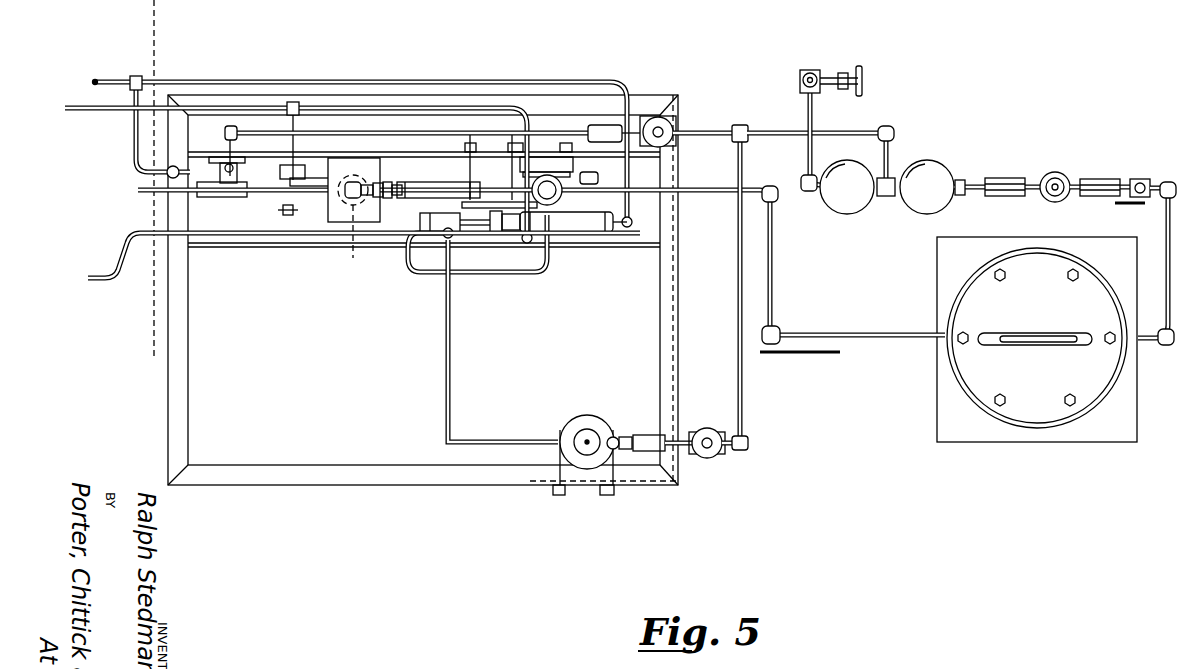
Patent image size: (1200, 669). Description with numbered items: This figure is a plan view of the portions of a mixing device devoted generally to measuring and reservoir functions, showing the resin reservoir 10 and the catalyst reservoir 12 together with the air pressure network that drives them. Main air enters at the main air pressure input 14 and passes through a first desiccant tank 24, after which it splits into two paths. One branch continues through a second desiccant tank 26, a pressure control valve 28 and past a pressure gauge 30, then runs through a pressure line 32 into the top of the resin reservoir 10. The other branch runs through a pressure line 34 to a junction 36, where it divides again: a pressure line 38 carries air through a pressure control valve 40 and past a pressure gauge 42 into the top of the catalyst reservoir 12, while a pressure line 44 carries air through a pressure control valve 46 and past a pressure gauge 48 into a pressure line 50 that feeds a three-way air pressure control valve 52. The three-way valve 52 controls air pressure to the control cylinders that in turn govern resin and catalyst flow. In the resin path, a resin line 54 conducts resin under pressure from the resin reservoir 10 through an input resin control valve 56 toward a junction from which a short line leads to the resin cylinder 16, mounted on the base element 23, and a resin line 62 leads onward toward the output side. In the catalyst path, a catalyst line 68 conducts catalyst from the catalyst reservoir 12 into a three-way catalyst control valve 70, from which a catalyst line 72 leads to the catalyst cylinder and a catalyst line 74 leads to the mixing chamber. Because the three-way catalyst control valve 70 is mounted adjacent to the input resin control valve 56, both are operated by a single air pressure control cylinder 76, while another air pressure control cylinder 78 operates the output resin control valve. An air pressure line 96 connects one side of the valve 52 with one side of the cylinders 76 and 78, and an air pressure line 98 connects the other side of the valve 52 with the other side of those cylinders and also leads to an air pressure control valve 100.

The resin reservoir 10 is at (1050, 379).
The catalyst reservoir 12 is at (577, 425).
The main air pressure input 14 is at (811, 66).
The resin cylinder 16 is at (355, 217).
The base element 23 is at (199, 150).
The first desiccant tank 24 is at (836, 204).
The second desiccant tank 26 is at (912, 204).
The pressure control valve 28 is at (1058, 172).
The pressure gauge 30 is at (1130, 181).
The pressure line 32 is at (1164, 224).
The pressure line 34 is at (770, 129).
The junction 36 is at (741, 125).
The pressure line 38 is at (737, 290).
The pressure control valve 40 is at (712, 427).
The pressure gauge 42 is at (645, 434).
The pressure line 44 is at (706, 129).
The pressure control valve 46 is at (668, 120).
The pressure gauge 48 is at (605, 125).
The pressure line 50 is at (443, 134).
The three-way air pressure control valve 52 is at (230, 196).
The resin line 54 is at (838, 336).
The input resin control valve 56 is at (460, 183).
The resin line 62 is at (142, 193).
The catalyst line 68 is at (492, 432).
The three-way catalyst control valve 70 is at (445, 238).
The catalyst line 72 is at (496, 275).
The catalyst line 74 is at (272, 231).
The air pressure control cylinder 76 is at (593, 233).
The air pressure control cylinder 78 is at (565, 191).
The air pressure line 96 is at (78, 111).
The air pressure line 98 is at (100, 80).
The air pressure control valve 100 is at (318, 172).